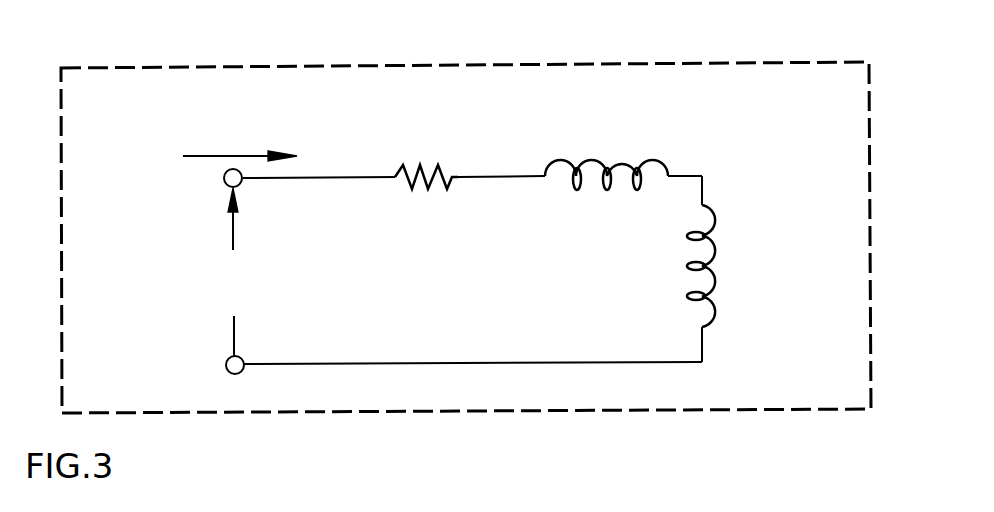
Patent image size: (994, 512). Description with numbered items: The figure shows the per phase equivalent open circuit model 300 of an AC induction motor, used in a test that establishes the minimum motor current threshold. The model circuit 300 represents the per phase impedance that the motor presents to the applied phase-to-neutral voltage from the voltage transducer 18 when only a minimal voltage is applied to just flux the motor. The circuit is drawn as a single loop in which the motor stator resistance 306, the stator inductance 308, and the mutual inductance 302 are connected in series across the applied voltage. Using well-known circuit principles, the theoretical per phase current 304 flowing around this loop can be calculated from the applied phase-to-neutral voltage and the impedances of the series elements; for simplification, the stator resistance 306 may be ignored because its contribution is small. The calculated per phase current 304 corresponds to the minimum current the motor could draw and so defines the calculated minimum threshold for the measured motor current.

The per phase equivalent open circuit model 300 is at (692, 411).
The theoretical per phase current 304 is at (242, 156).
The voltage transducer 18 is at (237, 272).
The motor stator resistance 306 is at (412, 186).
The stator inductance 308 is at (577, 186).
The magnetizing inductance Lm 302 is at (712, 292).